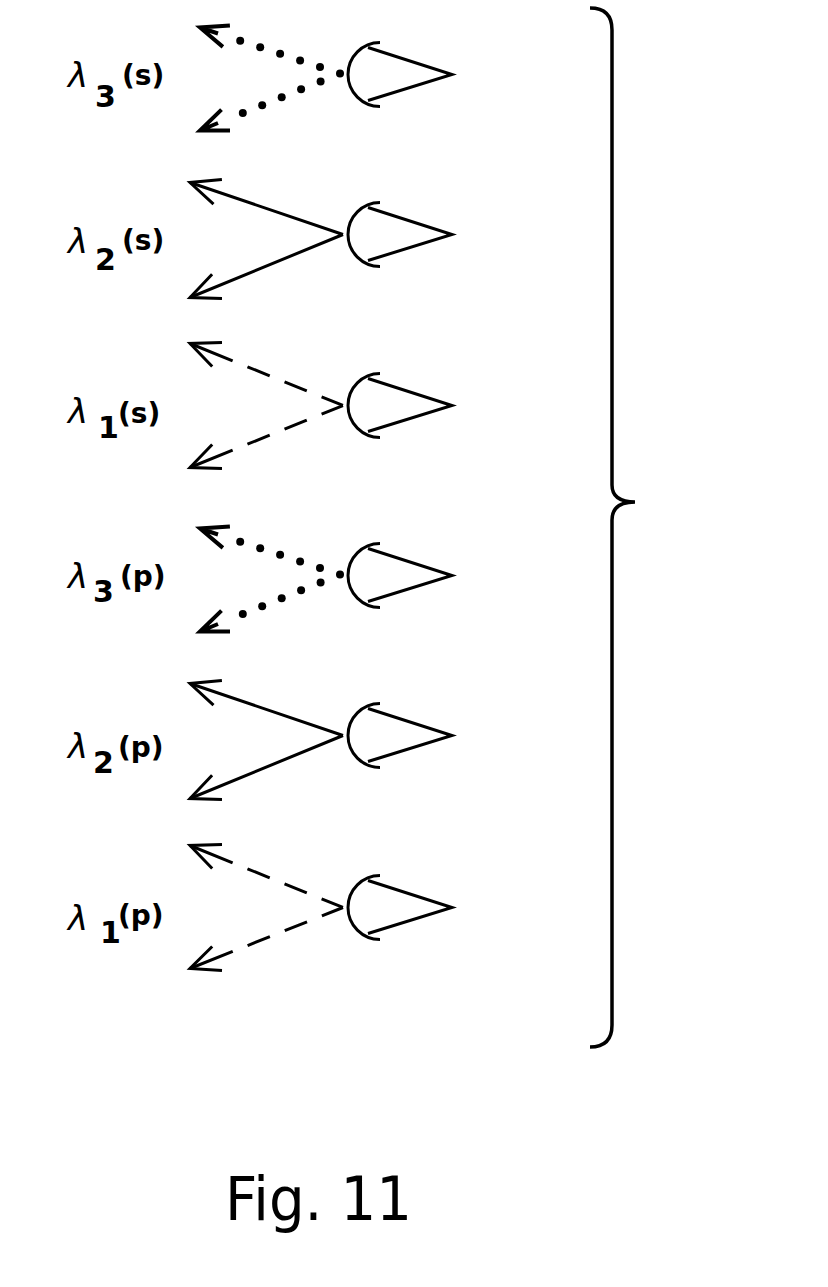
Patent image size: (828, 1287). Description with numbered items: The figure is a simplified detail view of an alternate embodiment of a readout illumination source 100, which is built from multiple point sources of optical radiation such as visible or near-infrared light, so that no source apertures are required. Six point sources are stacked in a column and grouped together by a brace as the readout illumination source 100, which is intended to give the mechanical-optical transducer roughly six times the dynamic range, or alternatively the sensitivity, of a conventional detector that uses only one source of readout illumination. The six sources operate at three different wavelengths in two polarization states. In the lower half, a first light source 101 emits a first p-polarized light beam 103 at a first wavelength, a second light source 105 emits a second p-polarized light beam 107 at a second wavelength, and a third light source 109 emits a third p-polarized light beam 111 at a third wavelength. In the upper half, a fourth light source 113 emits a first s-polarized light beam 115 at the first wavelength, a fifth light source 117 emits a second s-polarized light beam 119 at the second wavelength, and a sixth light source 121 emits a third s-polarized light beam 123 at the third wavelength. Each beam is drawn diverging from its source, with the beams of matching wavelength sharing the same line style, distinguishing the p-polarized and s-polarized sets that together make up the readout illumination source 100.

The readout illumination source 100 is at (649, 527).
The first light source 101 is at (407, 923).
The first p-polarized light beam 103 is at (263, 943).
The second light source 105 is at (407, 750).
The second p-polarized light beam 107 is at (252, 777).
The third light source 109 is at (393, 592).
The third p-polarized light beam 111 is at (280, 600).
The fourth light source 113 is at (413, 418).
The first s-polarized light beam 115 is at (257, 443).
The fifth light source 117 is at (410, 248).
The second s-polarized light beam 119 is at (260, 268).
The sixth light source 121 is at (400, 90).
The third s-polarized light beam 123 is at (258, 107).